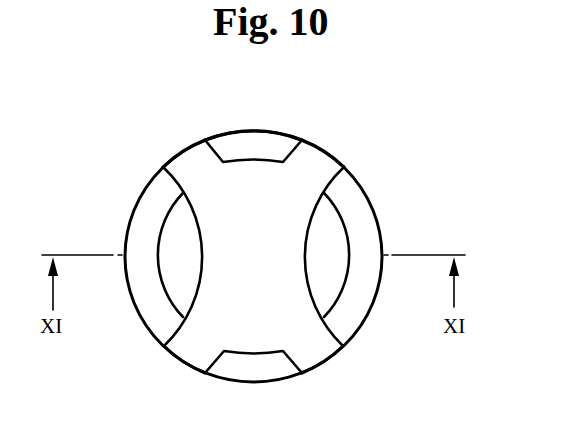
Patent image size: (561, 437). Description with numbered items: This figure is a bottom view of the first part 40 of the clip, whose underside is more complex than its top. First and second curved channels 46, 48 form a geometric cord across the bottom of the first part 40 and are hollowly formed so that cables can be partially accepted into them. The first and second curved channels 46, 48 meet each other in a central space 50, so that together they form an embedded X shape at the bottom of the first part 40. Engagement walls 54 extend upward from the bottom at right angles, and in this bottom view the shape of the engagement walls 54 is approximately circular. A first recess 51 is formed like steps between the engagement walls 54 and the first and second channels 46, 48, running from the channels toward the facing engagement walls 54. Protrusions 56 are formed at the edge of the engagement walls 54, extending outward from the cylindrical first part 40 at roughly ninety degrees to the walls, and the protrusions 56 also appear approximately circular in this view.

The first part 40 is at (434, 187).
The first curved channel 46 is at (319, 152).
The second curved channel 48 is at (183, 155).
The central space 50 is at (270, 271).
The first recess 51 is at (192, 271).
The engagement walls 54 is at (237, 133).
The protrusions 56 is at (268, 130).